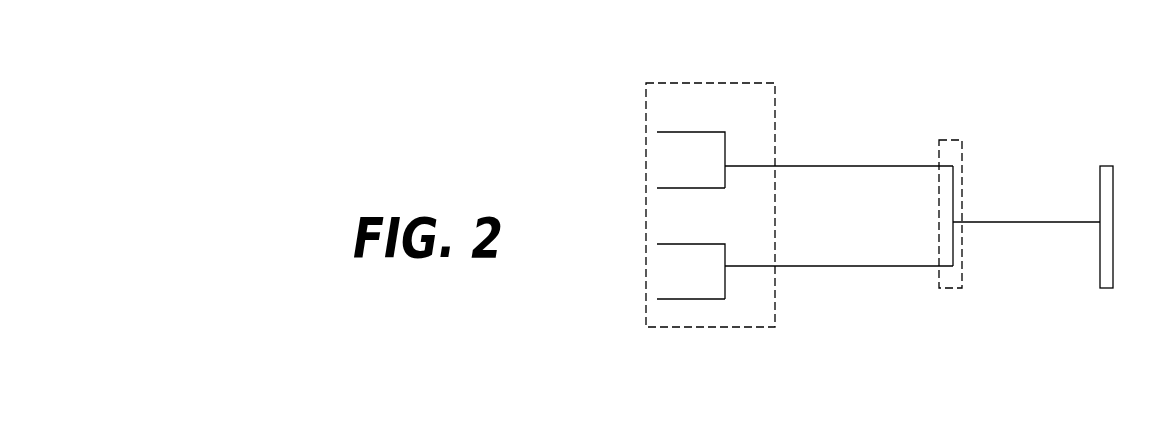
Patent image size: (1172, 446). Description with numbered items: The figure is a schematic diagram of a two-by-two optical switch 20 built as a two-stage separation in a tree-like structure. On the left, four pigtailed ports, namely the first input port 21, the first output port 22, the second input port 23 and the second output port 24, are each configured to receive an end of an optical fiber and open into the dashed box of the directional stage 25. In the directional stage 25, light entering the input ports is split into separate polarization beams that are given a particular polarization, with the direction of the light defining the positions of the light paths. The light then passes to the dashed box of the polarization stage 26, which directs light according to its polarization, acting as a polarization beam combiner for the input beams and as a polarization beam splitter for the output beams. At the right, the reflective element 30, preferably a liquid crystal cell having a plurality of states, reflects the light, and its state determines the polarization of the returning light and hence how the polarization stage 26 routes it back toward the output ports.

The optical switch 20 is at (1048, 103).
The port I1 21 is at (697, 132).
The port O1 22 is at (697, 188).
The port I2 23 is at (670, 244).
The port O2 24 is at (700, 299).
The directional stage 25 is at (775, 130).
The polarization stage 26 is at (1035, 357).
The reflective element 30 is at (1100, 262).